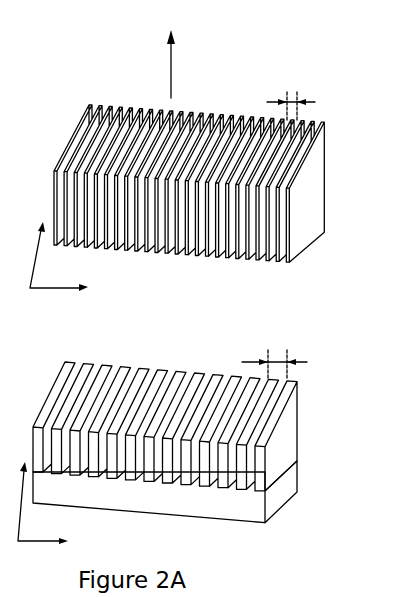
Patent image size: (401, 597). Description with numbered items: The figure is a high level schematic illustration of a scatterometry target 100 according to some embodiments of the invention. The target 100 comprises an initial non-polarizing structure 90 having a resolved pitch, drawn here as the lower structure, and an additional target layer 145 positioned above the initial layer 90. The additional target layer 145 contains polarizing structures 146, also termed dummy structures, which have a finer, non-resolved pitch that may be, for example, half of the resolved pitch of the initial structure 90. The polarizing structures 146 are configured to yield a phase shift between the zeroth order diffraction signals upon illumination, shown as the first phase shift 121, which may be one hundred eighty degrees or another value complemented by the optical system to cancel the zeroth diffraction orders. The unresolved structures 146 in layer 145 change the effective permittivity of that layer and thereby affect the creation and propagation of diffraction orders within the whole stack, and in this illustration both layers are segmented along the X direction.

The scatterometry target 100 is at (43, 30).
The additional target layer 145 is at (74, 83).
The polarizing structure 146 is at (325, 144).
The first phase shift 121 is at (171, 62).
The initial non-polarizing structure 90 is at (59, 345).